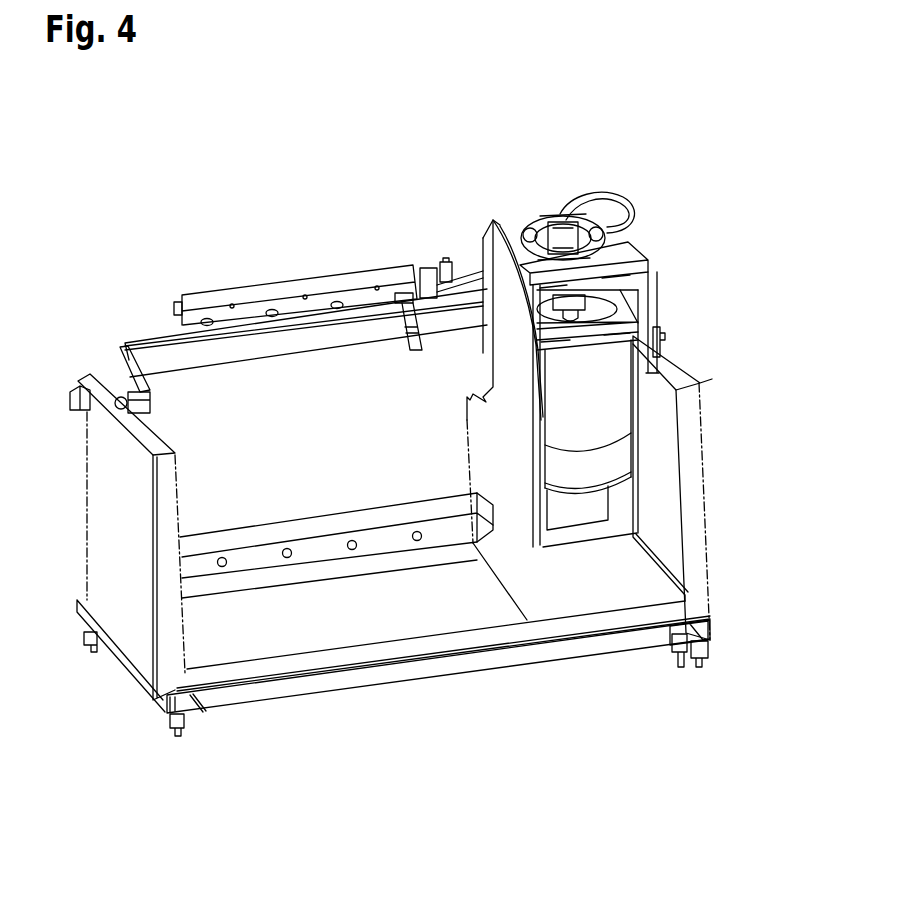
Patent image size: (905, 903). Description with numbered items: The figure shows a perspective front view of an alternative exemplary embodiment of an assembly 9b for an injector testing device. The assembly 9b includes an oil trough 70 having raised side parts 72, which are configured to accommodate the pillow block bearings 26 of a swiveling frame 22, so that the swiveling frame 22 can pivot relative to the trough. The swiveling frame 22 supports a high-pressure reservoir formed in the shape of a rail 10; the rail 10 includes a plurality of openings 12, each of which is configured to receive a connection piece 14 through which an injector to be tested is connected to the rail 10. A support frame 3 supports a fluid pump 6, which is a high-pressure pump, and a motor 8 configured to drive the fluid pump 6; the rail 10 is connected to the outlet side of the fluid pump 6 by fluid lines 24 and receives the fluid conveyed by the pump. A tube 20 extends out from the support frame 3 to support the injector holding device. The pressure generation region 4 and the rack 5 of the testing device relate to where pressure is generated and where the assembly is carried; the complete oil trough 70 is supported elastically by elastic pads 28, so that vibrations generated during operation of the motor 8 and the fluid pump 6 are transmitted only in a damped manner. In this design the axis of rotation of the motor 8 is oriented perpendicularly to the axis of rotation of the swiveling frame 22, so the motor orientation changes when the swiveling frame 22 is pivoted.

The assembly 9b is at (149, 247).
The support frame 3 is at (440, 508).
The pressure generation region 4 is at (578, 630).
The rack 5 is at (346, 663).
The fluid pump 6 is at (535, 208).
The motor 8 is at (617, 455).
The rail 10 is at (322, 277).
The openings 12 is at (207, 326).
The connection piece 14 is at (420, 266).
The tube 20 is at (222, 567).
The swiveling frame 22 is at (388, 323).
The fluid lines 24 is at (605, 191).
The pillow block bearings 26 is at (126, 386).
The elastic pads 28 is at (83, 643).
The oil trough 70 is at (715, 449).
The raised side parts 72 is at (115, 542).